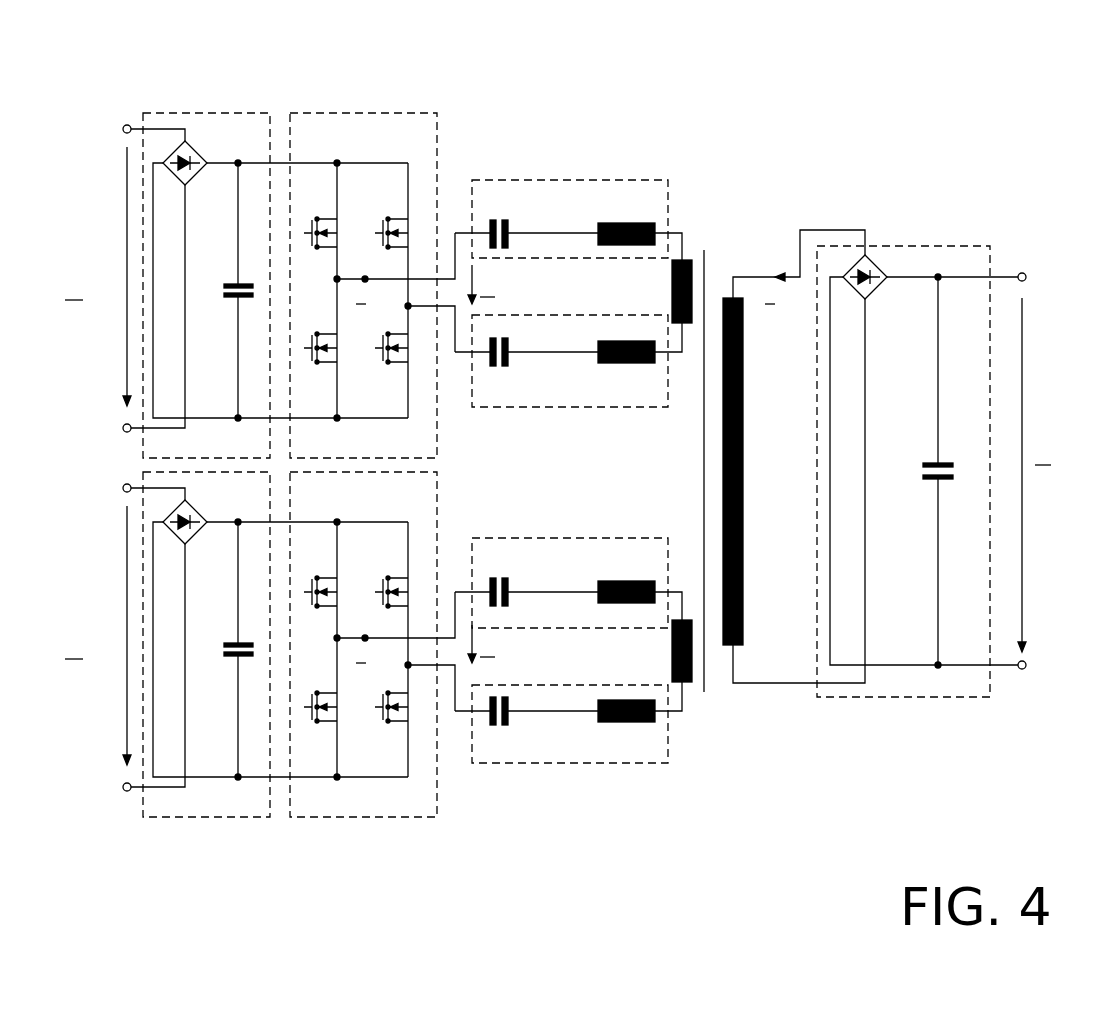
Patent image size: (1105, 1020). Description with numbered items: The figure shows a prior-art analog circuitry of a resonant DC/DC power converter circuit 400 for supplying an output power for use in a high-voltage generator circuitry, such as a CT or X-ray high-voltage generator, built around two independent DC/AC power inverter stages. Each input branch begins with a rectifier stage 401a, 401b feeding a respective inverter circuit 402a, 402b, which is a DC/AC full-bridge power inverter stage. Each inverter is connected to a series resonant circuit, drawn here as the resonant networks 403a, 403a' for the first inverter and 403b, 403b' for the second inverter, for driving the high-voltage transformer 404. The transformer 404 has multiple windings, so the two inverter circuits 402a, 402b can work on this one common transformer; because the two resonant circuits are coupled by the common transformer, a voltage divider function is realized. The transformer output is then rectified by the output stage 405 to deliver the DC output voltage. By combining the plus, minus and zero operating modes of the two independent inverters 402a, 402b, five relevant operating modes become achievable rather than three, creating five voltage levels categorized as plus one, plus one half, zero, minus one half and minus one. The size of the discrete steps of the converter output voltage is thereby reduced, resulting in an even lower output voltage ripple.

The resonant DC/DC power converter circuit 400 is at (864, 86).
The input rectifier stage 401a is at (207, 113).
The input rectifier stage 401b is at (207, 817).
The inverter circuit 402a is at (372, 113).
The inverter circuit 402b is at (372, 817).
The series resonant circuit 403a is at (573, 219).
The series resonant circuit 403a' is at (568, 391).
The series resonant circuit 403b is at (573, 579).
The series resonant circuit 403b' is at (568, 757).
The high-voltage transformer 404 is at (704, 250).
The output rectifier stage 405 is at (945, 246).